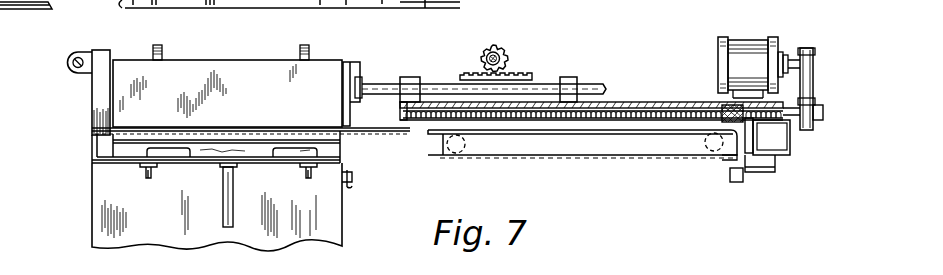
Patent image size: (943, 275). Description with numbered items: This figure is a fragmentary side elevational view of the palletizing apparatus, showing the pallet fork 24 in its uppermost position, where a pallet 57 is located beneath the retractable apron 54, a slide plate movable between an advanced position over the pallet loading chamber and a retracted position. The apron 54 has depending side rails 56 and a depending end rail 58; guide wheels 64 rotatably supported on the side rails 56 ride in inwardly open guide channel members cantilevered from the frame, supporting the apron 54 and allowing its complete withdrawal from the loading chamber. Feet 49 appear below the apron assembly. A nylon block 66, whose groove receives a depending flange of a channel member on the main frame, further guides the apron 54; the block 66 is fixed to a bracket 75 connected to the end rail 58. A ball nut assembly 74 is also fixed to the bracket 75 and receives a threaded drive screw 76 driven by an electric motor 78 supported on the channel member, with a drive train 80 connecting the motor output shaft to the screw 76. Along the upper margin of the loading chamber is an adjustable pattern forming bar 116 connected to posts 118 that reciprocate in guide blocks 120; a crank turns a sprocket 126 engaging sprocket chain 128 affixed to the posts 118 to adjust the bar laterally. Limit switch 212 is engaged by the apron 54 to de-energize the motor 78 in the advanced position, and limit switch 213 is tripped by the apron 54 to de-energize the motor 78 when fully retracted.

The pallet fork 24 is at (246, 177).
The mounting feet 49 is at (150, 172).
The retractable apron 54 is at (305, 128).
The side rails 56 is at (527, 143).
The pallet 57 is at (125, 162).
The end rail 58 is at (736, 147).
The guide wheels 64 is at (429, 181).
The nylon block 66 is at (750, 158).
The ball nut assembly 74 is at (782, 144).
The bracket 75 is at (742, 153).
The threaded drive screw 76 is at (642, 110).
The electric motor 78 is at (746, 40).
The drive train 80 is at (815, 85).
The pattern forming bar 116 is at (352, 63).
The posts 118 is at (447, 83).
The guide blocks 120 is at (570, 80).
The sprocket 126 is at (498, 46).
The sprocket chain 128 is at (522, 73).
The limit switch 212 is at (363, 195).
The limit switch 213 is at (730, 175).